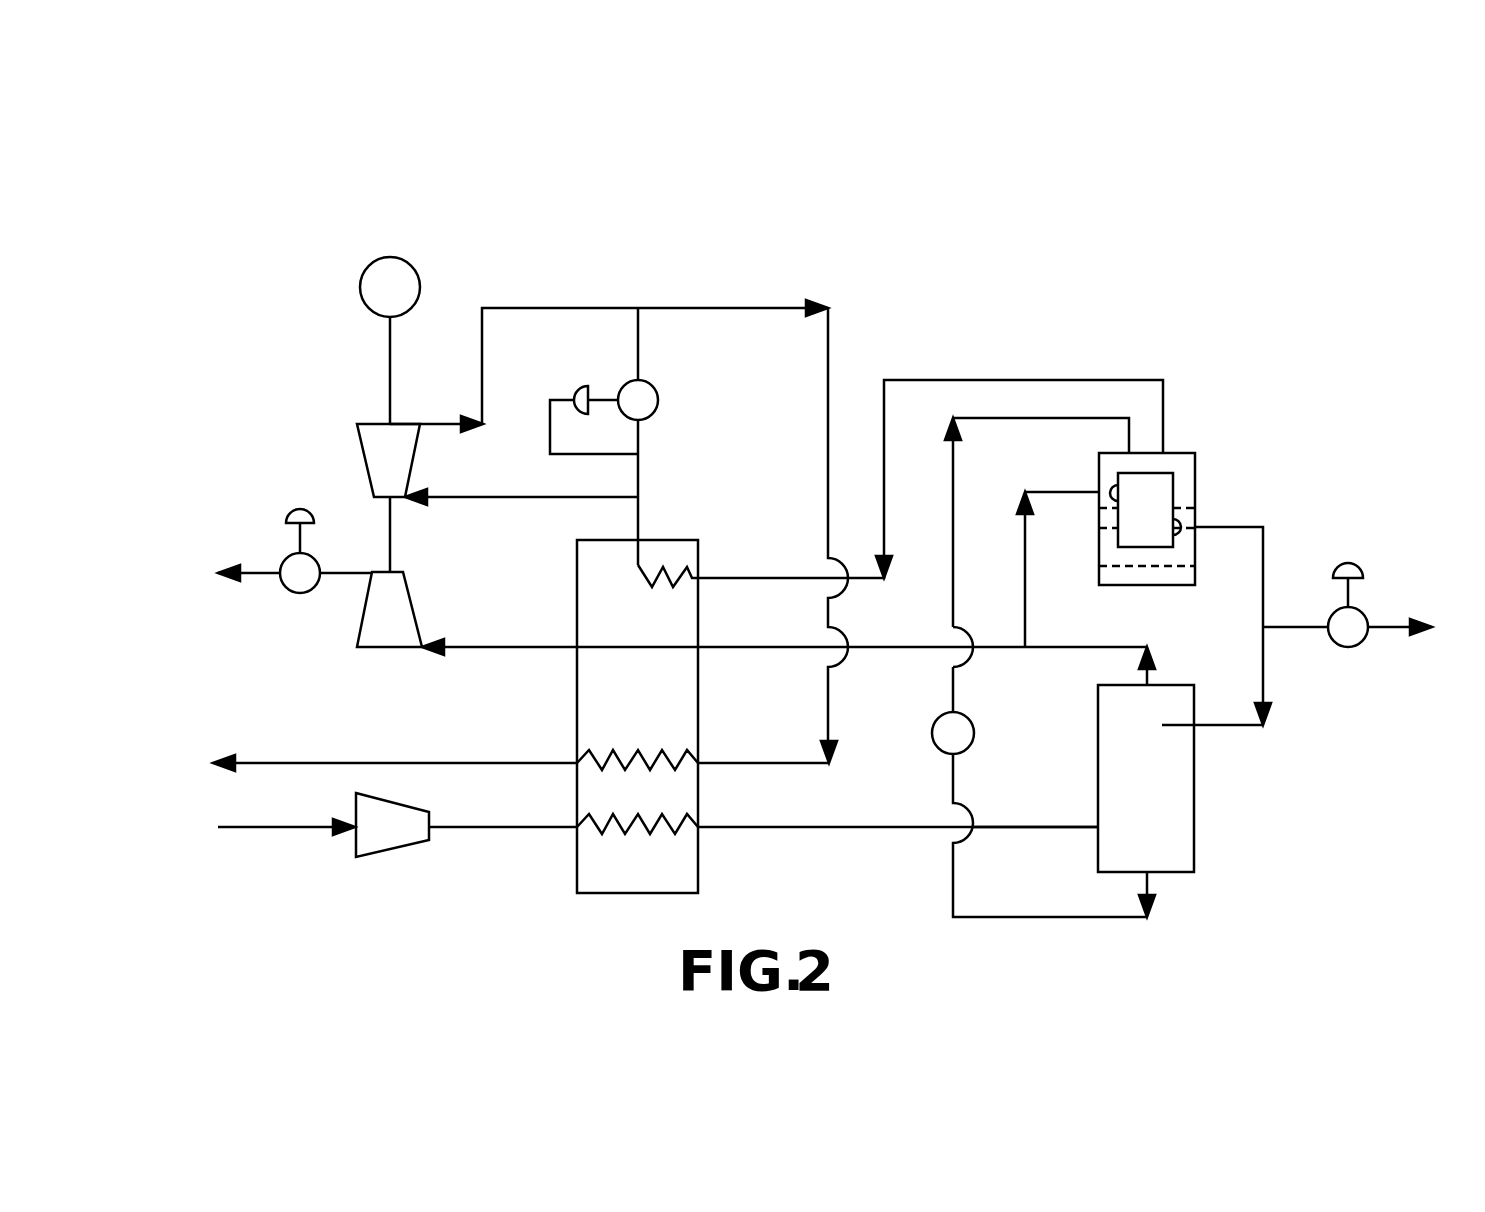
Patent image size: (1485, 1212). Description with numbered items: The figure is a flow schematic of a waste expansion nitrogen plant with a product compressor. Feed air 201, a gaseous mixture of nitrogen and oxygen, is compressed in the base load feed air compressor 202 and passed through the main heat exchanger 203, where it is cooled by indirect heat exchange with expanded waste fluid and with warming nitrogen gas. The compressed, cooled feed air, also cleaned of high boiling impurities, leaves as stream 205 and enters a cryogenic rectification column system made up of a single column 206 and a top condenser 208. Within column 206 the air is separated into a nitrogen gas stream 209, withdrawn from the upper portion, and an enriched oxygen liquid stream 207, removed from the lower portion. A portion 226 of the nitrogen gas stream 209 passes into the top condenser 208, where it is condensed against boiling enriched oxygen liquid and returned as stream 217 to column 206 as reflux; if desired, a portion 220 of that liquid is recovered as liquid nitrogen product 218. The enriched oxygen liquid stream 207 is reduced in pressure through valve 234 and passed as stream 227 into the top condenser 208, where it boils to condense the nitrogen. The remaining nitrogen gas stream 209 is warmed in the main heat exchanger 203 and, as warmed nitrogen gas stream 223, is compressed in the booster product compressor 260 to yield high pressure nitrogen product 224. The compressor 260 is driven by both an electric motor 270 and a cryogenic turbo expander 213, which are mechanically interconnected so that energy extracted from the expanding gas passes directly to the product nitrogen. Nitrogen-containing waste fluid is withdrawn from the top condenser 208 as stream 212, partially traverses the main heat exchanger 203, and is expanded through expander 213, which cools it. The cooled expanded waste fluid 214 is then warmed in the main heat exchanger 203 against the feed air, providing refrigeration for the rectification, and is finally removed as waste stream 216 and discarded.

The feed air 201 is at (290, 828).
The base load feed air compressor 202 is at (395, 850).
The main heat exchanger 203 is at (668, 717).
The stream 205 is at (1058, 826).
The single column 206 is at (1172, 817).
The enriched oxygen liquid stream 207 is at (952, 775).
The top condenser 208 is at (1165, 493).
The nitrogen gas stream 209 is at (770, 648).
The waste fluid stream 212 is at (1052, 380).
The turbo expander 213 is at (357, 452).
The cooled expanded waste fluid 214 is at (695, 308).
The waste stream 216 is at (412, 763).
The stream 217 is at (1263, 663).
The liquid nitrogen product 218 is at (1390, 627).
The portion 220 is at (1288, 627).
The warmed nitrogen gas stream 223 is at (508, 647).
The high pressure nitrogen product 224 is at (262, 575).
The portion 226 is at (1025, 620).
The stream 227 is at (953, 502).
The valve 234 is at (940, 720).
The booster product compressor 260 is at (393, 648).
The electric motor 270 is at (420, 277).